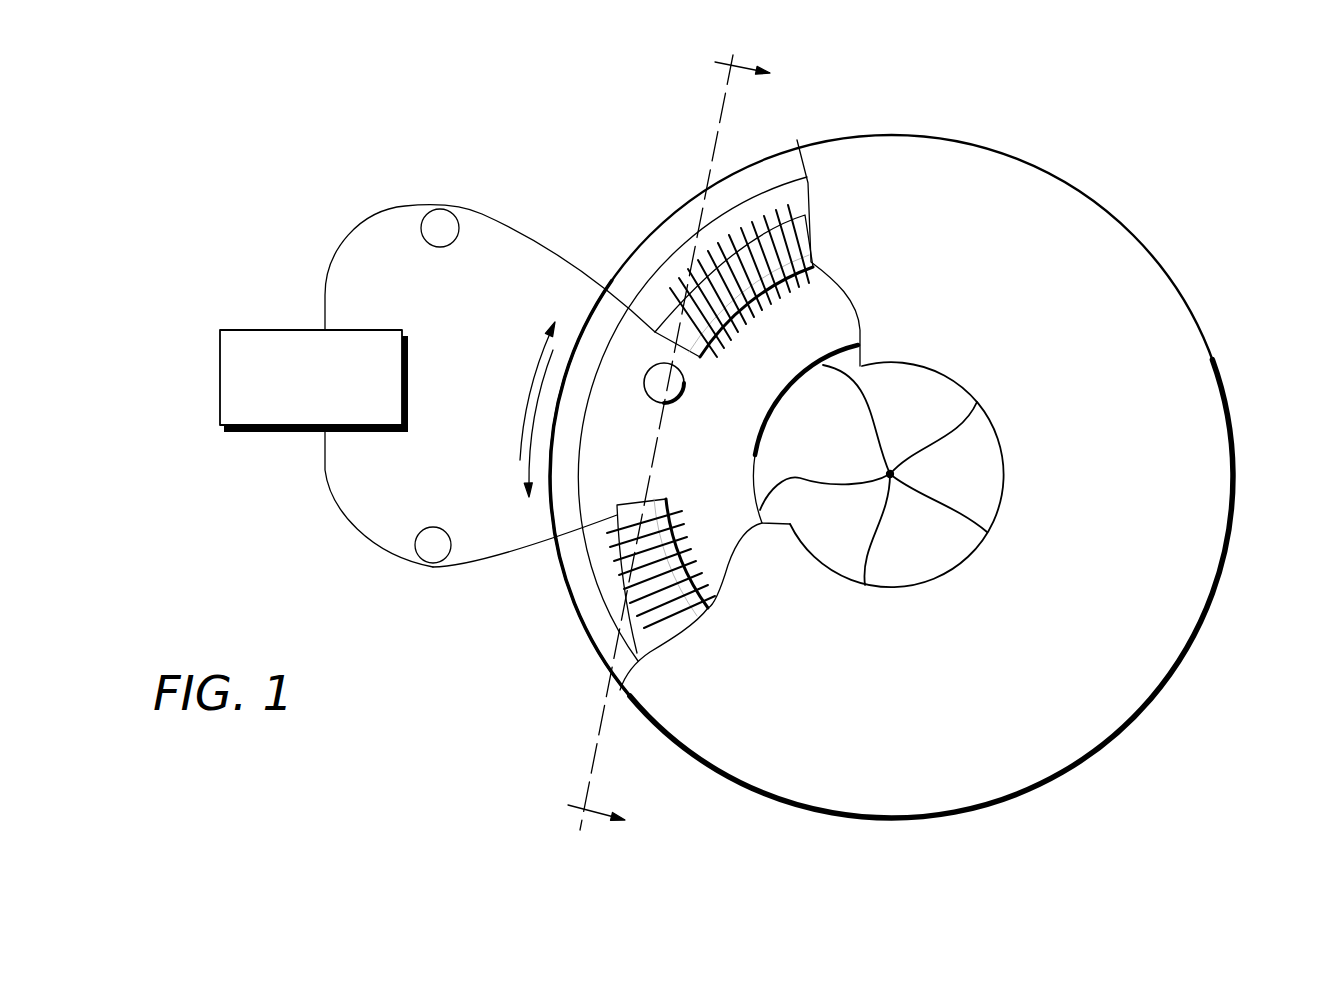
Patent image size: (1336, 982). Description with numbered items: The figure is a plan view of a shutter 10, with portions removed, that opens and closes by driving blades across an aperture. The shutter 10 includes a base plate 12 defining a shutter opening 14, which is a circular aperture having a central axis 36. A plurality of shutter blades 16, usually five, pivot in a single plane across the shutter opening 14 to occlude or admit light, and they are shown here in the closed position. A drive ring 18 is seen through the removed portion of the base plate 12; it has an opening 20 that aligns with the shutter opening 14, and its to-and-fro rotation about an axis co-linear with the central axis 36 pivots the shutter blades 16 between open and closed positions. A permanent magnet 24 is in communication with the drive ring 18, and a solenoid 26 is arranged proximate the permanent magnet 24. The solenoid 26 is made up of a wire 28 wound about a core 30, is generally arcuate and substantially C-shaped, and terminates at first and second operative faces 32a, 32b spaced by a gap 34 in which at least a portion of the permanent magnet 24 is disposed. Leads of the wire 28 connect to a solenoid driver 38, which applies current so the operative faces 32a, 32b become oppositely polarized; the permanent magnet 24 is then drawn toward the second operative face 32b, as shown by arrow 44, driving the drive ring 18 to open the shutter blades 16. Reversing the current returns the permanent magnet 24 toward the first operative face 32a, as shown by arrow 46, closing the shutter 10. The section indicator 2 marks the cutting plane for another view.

The electric machine assembly 10 is at (1194, 179).
The housing / outer body 12 is at (1060, 650).
The hub 14 is at (963, 387).
The spokes 16 is at (800, 447).
The stator segment 18 is at (597, 430).
The rotor body 20 is at (757, 453).
The sensor 24 is at (652, 396).
The mounting member 26 is at (598, 541).
The mounting bracket / housing 28 is at (343, 240).
The first coil winding 30 is at (762, 292).
The first tooth 32a is at (660, 343).
The second tooth 32b is at (637, 500).
The second coil winding 34 is at (667, 494).
The axis of rotation 36 is at (890, 474).
The controller 38 is at (295, 411).
The rotation direction arrow 44 is at (527, 480).
The rotation direction arrow 46 is at (540, 357).
The section line 2- 2 is at (679, 446).